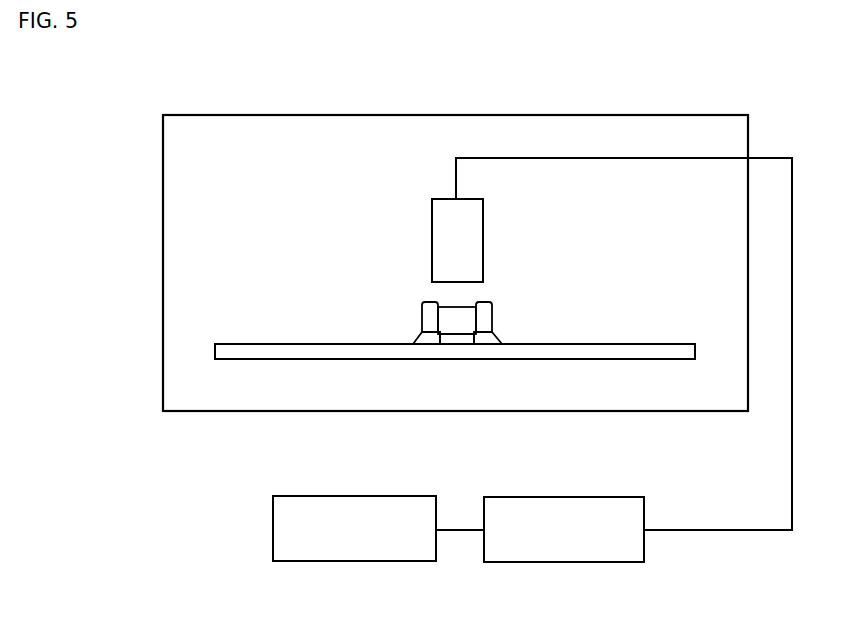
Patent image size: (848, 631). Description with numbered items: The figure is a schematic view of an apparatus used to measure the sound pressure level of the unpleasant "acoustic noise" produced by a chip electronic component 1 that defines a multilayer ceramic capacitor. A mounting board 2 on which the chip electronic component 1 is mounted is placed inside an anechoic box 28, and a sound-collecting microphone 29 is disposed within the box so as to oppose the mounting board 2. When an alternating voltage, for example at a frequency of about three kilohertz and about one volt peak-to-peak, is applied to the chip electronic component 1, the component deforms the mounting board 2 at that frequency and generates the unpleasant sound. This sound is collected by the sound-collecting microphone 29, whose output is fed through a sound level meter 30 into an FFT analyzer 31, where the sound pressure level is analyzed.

The chip electronic component 1 is at (484, 317).
The mounting board 2 is at (293, 352).
The anechoic box 28 is at (574, 114).
The sound-collecting microphone 29 is at (431, 239).
The sound level meter 30 is at (564, 566).
The FFT analyzer 31 is at (355, 565).